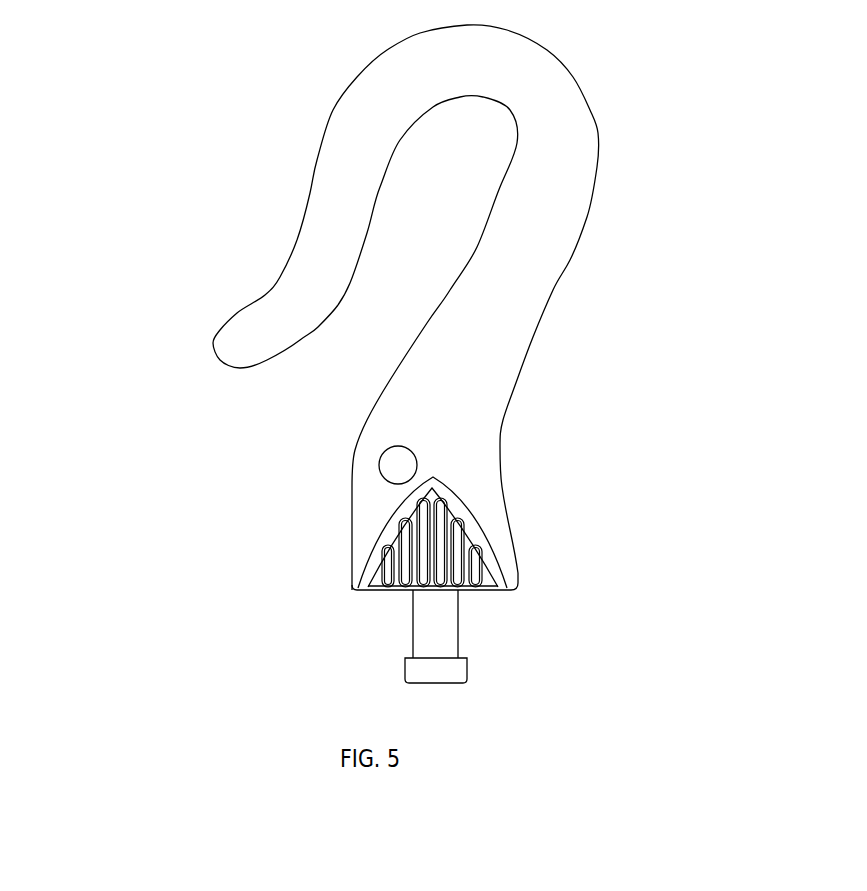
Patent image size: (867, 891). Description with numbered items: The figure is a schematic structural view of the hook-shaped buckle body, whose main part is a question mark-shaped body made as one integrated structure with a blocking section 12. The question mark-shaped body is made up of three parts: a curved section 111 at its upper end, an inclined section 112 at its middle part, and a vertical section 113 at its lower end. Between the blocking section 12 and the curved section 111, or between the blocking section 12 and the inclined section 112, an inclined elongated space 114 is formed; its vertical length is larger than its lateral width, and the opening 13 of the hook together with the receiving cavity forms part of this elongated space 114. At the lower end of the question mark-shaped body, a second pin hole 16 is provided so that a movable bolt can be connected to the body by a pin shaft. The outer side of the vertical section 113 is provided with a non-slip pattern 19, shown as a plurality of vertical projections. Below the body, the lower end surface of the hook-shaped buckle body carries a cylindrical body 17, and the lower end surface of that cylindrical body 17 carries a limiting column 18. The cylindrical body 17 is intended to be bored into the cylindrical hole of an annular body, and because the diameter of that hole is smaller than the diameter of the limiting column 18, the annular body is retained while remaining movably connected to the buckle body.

The curved section 111 is at (508, 80).
The inclined section 112 is at (528, 277).
The vertical section 113 is at (375, 510).
The inclined elongated space 114 is at (430, 218).
The blocking section 12 is at (320, 302).
The opening 13 is at (335, 373).
The second pin hole 16 is at (400, 467).
The cylindrical body 17 is at (440, 628).
The limiting column 18 is at (435, 672).
The non-slip pattern 19 is at (427, 540).